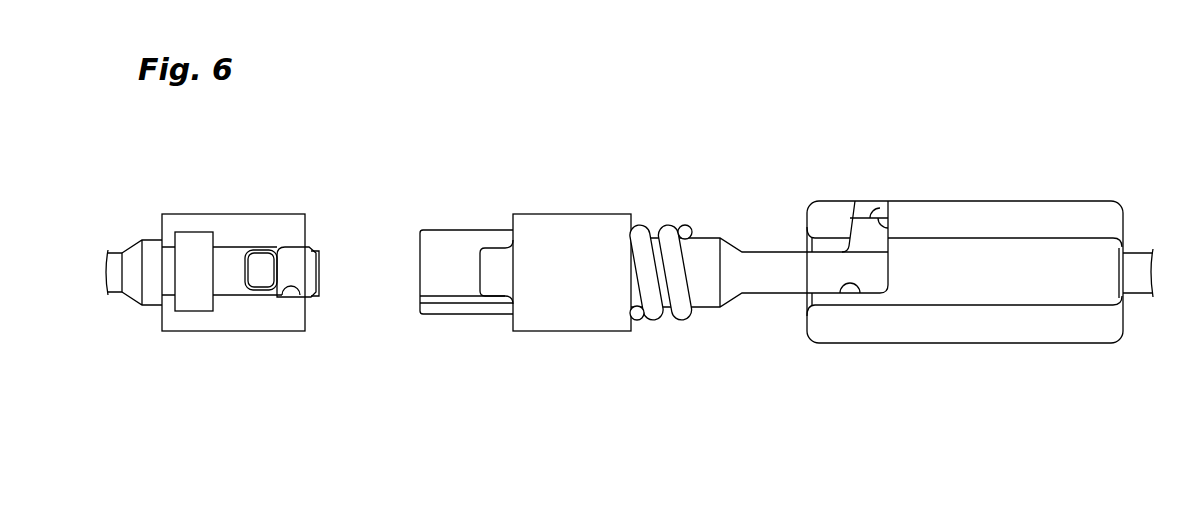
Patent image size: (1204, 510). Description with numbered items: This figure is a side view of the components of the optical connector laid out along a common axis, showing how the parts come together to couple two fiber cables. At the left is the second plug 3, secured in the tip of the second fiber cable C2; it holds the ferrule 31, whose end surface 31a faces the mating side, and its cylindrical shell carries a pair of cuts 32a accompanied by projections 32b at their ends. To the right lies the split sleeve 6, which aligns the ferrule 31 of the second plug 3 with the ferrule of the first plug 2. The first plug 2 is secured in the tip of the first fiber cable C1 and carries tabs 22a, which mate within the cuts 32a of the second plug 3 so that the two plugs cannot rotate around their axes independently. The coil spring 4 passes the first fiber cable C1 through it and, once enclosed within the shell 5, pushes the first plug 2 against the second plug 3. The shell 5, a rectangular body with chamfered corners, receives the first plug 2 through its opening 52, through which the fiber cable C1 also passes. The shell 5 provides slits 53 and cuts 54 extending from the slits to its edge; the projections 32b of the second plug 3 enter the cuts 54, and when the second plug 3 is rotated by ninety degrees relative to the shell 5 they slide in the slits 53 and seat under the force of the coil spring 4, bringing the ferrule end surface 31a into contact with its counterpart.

The first plug 2 is at (574, 202).
The second plug 3 is at (241, 203).
The coil spring 4 is at (683, 312).
The shell 5 is at (1007, 192).
The split sleeve 6 is at (450, 229).
The tabs 22a is at (493, 285).
The ferrule 31 is at (300, 265).
The end surface 31a is at (318, 281).
The cuts 32a is at (288, 297).
The projections 32b is at (262, 283).
The opening 52 is at (1124, 276).
The slits 53 is at (872, 216).
The cuts 54 is at (842, 295).
The first fiber cable C1 is at (770, 284).
The second fiber cable C2 is at (112, 285).